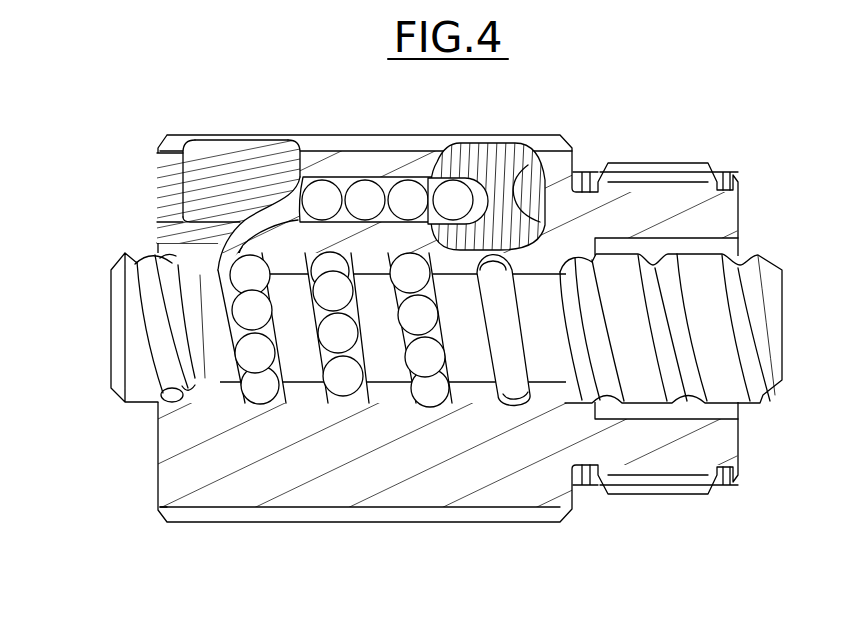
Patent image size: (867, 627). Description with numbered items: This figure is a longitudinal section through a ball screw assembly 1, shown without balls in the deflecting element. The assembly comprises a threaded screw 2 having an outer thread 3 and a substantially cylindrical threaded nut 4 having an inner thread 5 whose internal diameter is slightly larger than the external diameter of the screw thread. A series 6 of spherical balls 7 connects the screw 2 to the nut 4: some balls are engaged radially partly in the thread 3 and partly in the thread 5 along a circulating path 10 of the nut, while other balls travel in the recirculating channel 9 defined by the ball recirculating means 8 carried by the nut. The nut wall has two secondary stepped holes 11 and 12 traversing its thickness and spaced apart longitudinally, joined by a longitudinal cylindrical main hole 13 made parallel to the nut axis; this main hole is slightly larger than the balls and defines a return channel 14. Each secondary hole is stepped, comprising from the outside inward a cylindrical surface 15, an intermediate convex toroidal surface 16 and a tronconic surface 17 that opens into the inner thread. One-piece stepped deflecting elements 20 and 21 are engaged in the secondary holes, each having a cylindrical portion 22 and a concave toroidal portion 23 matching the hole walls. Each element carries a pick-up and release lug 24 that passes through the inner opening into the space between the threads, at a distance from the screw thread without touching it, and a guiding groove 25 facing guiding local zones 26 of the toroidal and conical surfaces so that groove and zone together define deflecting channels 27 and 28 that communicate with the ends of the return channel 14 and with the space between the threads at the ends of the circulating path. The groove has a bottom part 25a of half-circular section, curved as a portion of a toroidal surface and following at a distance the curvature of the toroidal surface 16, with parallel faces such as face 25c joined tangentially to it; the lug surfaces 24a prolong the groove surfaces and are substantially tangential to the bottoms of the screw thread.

The ball screw assembly 1 is at (768, 161).
The threaded screw 2 is at (718, 362).
The outer thread 3 is at (678, 306).
The threaded nut 4 is at (536, 482).
The inner thread 5 is at (377, 347).
The series of spherical balls 6 is at (330, 336).
The spherical balls 7 is at (257, 353).
The ball recirculating means 8 is at (203, 125).
The recirculating channel 9 is at (347, 173).
The circulating path 10 is at (436, 256).
The secondary stepped hole 11 is at (198, 163).
The secondary stepped hole 12 is at (534, 221).
The longitudinal cylindrical main hole 13 is at (408, 180).
The return channel 14 is at (327, 183).
The cylindrical surface 15 is at (196, 213).
The intermediate convex toroidal surface 16 is at (248, 202).
The tronconic surface 17 is at (215, 326).
The deflecting element 20 is at (252, 150).
The deflecting element 21 is at (514, 184).
The cylindrical portion 22 is at (200, 141).
The concave toroidal portion 23 is at (212, 241).
The pick-up and release lug 24 is at (178, 348).
The lug surface 24a is at (234, 304).
The guiding groove 25 is at (192, 206).
The bottom part 25a is at (213, 233).
The face 25c is at (234, 278).
The guiding local zone 26 is at (212, 255).
The deflecting channel 27 is at (243, 220).
The deflecting channel 28 is at (458, 192).